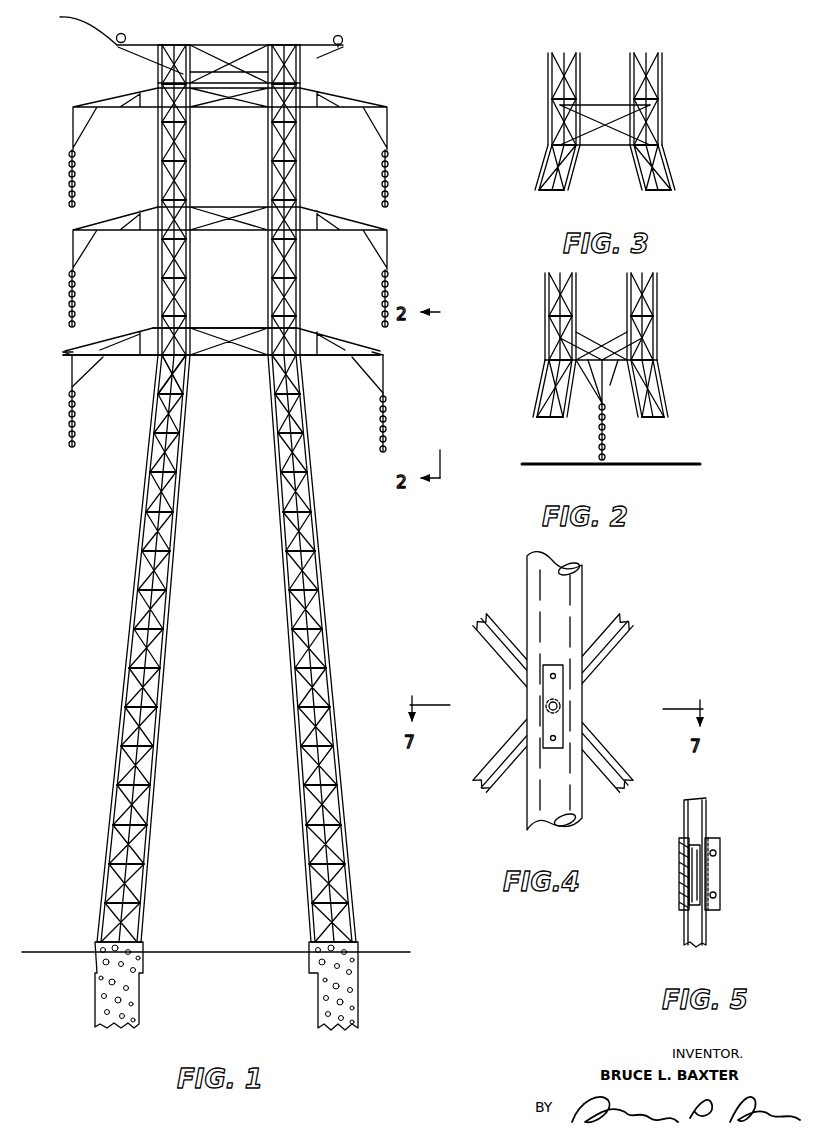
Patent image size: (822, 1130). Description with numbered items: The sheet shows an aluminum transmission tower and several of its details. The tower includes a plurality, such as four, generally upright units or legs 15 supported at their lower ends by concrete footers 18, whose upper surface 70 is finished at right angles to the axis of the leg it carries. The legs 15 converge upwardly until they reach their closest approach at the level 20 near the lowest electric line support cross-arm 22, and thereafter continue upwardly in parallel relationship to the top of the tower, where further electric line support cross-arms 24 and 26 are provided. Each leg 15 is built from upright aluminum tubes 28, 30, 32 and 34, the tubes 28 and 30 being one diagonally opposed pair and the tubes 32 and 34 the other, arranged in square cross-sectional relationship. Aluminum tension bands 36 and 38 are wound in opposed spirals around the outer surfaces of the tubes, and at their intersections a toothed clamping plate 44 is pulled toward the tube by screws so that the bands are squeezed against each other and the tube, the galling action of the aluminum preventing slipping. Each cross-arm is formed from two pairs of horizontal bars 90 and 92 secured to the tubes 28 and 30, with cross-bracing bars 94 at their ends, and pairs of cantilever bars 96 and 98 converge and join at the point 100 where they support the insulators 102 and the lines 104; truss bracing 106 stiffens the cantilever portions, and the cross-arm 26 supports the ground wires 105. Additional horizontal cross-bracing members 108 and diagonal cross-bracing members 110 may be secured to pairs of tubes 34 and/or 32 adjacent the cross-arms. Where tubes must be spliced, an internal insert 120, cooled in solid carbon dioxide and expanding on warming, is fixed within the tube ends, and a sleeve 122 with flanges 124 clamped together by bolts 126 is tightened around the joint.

In FIG. 1, the upright unit or leg 15 is at (346, 698).
In FIG. 1, the footer 18 is at (95, 997).
In FIG. 1, the level of closest approach 20 is at (152, 369).
In FIG. 1, the lowest electric line support cross-arm 22 is at (308, 360).
In FIG. 1, the electric line support cross-arm 24 is at (328, 108).
In FIG. 1, the electric line support cross-arm 26 is at (318, 56).
In FIG. 1, the upright aluminum tube 28 is at (140, 678).
In FIG. 2, the upright aluminum tube 28 is at (628, 308).
In FIG. 5, the upright aluminum tube 28 is at (707, 813).
In FIG. 2, the upright aluminum tube 30 is at (657, 320).
In FIG. 1, the upright aluminum tube 32 is at (285, 593).
In FIG. 4, the upright aluminum tube 32 is at (560, 612).
In FIG. 1, the upright aluminum tube 34 is at (312, 595).
In FIG. 3, the upright aluminum tube 34 is at (563, 130).
In FIG. 2, the upright aluminum tube 34 is at (562, 325).
In FIG. 4, the tension member or band 36 is at (490, 657).
In FIG. 4, the tension member or band 38 is at (493, 757).
In FIG. 4, the clamping plate 44 is at (562, 725).
In FIG. 1, the upper surface of footer 70 is at (352, 940).
In FIG. 1, the horizontal bar 90 is at (240, 358).
In FIG. 1, the horizontal bar 92 is at (216, 322).
In FIG. 1, the cross-bracing bar 94 is at (200, 360).
In FIG. 1, the cantilever bar 96 is at (118, 338).
In FIG. 2, the cantilever bar 96 is at (592, 352).
In FIG. 1, the cantilever bar 98 is at (227, 384).
In FIG. 2, the cantilever bar 98 is at (611, 382).
In FIG. 1, the junction point of cantilever bars 100 is at (118, 44).
In FIG. 1, the insulator 102 is at (82, 427).
In FIG. 2, the insulator 102 is at (605, 450).
In FIG. 1, the electric line 104 is at (387, 210).
In FIG. 2, the electric line 104 is at (681, 466).
In FIG. 1, the ground wire or line 105 is at (125, 35).
In FIG. 1, the truss bracing 106 is at (340, 350).
In FIG. 2, the truss bracing 106 is at (606, 394).
In FIG. 3, the horizontal cross-bracing member 108 is at (592, 105).
In FIG. 3, the diagonal cross-bracing member 110 is at (615, 135).
In FIG. 5, the internal insert 120 is at (690, 858).
In FIG. 5, the sleeve 122 is at (680, 890).
In FIG. 5, the flange 124 is at (720, 843).
In FIG. 1, the bolt 126 is at (172, 48).
In FIG. 5, the bolt 126 is at (717, 855).